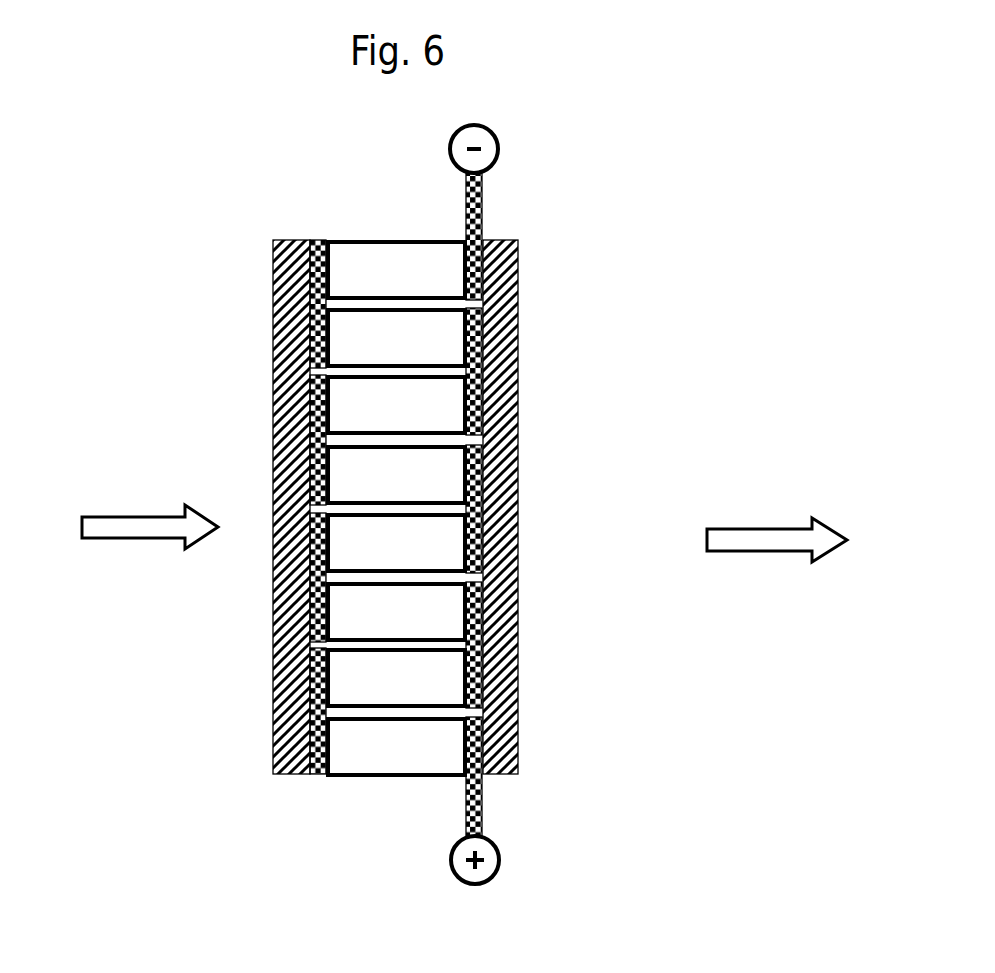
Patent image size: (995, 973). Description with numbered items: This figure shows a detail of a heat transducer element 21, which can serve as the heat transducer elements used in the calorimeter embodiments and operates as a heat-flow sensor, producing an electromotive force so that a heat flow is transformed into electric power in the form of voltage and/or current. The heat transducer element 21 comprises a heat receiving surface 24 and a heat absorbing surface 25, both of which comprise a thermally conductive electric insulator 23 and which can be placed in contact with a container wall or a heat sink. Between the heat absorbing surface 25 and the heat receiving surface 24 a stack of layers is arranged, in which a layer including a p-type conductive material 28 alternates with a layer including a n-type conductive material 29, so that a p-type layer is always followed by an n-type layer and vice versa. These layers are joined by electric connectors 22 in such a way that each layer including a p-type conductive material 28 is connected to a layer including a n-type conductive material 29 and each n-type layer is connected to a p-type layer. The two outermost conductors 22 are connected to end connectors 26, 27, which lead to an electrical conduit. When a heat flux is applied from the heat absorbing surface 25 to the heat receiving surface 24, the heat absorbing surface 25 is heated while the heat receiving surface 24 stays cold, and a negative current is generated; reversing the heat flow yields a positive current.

The heat transducer element 21 is at (583, 228).
The electric connectors 22 is at (310, 275).
The thermally conductive electric insulator 23 is at (293, 477).
The heat receiving surface 24 is at (487, 313).
The heat absorbing surface 25 is at (292, 398).
The end connector 26 is at (500, 855).
The end connector 27 is at (451, 146).
The layer including a p-type conductive material 28 is at (440, 352).
The layer including a n-type conductive material 29 is at (440, 282).